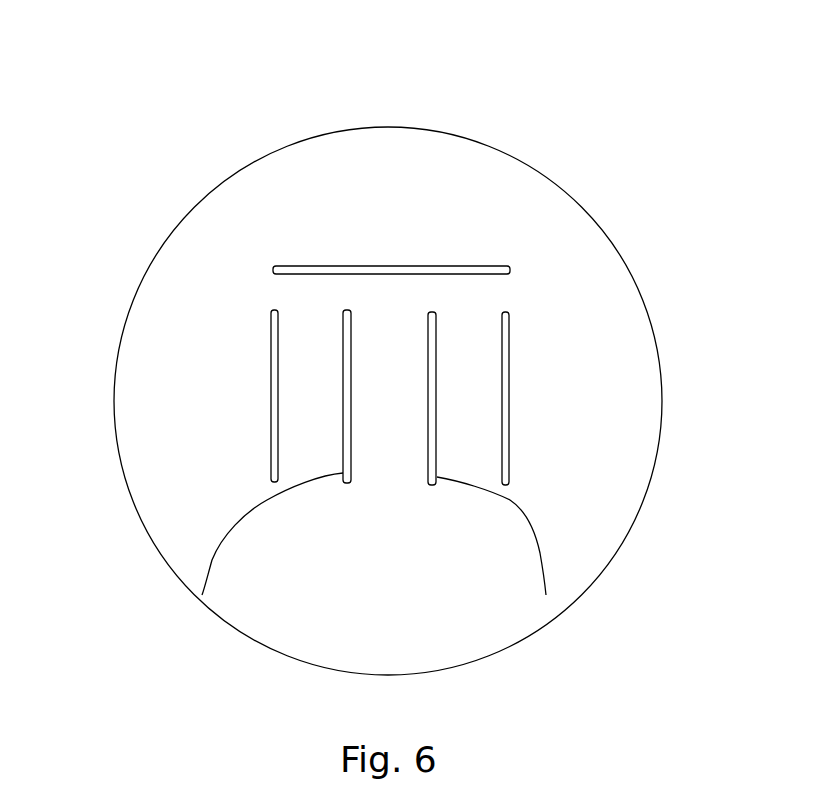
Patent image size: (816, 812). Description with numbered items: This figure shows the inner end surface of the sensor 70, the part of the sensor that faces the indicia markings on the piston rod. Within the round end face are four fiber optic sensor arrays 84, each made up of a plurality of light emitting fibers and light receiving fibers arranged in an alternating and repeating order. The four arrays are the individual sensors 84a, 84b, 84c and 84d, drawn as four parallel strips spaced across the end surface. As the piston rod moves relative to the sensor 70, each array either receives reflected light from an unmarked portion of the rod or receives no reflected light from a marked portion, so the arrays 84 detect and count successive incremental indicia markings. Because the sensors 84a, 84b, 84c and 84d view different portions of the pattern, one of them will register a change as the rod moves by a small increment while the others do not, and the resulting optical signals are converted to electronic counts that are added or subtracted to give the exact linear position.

The sensor 70 is at (362, 127).
The fiber optic sensor arrays 84 is at (271, 467).
The sensor 84a is at (271, 333).
The sensor 84b is at (343, 402).
The sensor 84c is at (437, 424).
The sensor 84d is at (509, 338).